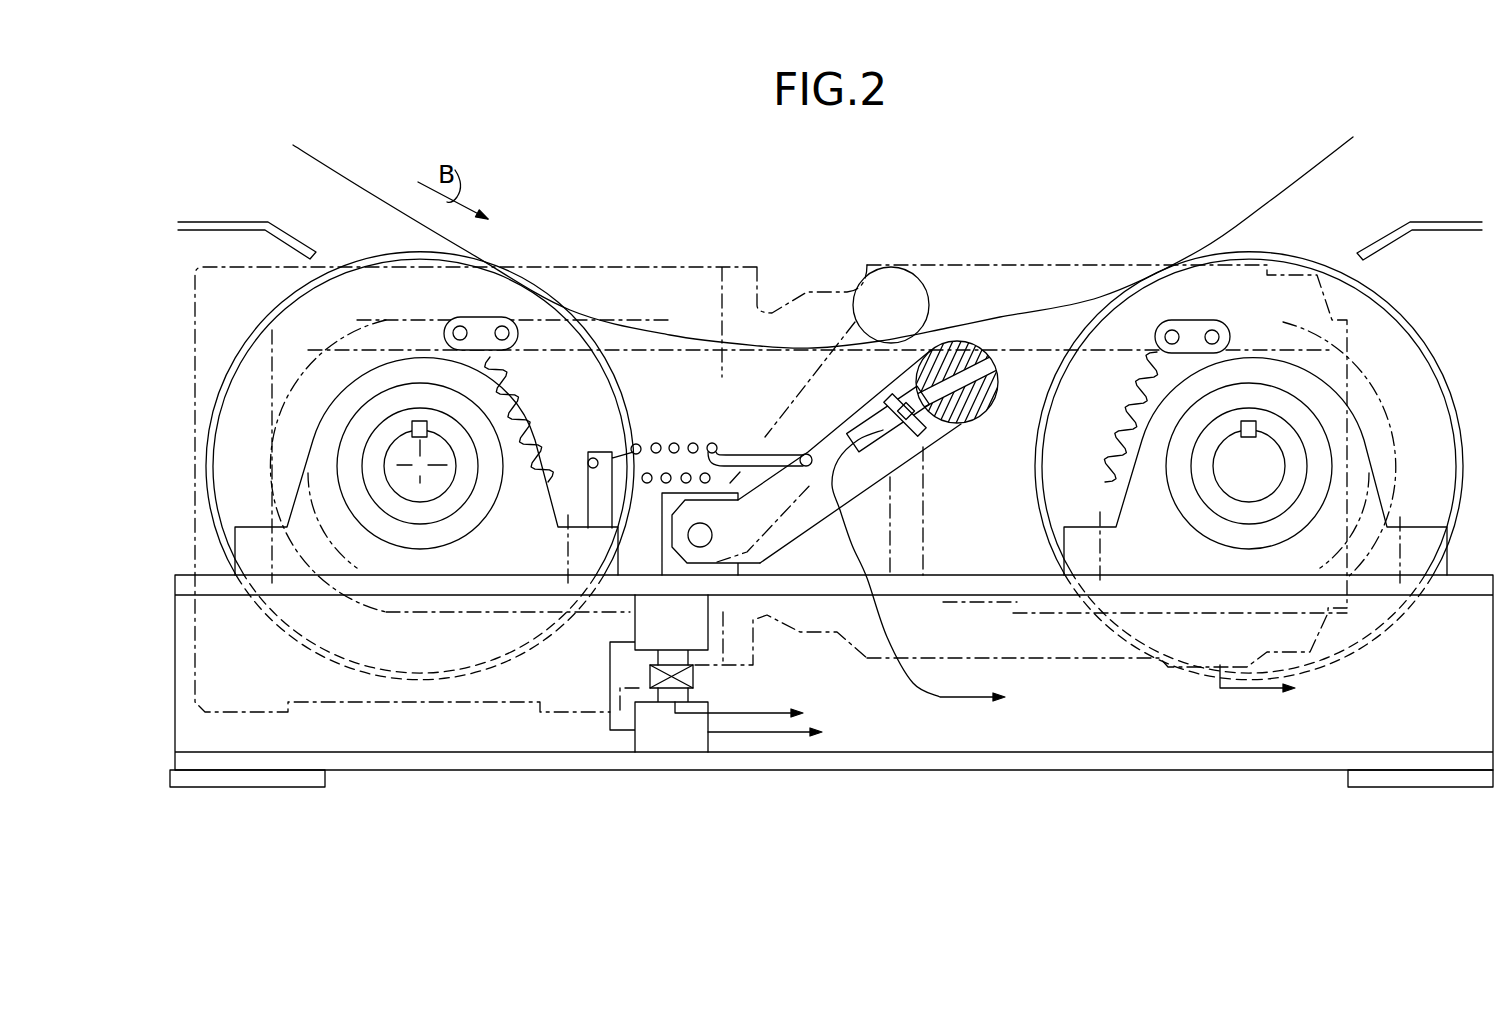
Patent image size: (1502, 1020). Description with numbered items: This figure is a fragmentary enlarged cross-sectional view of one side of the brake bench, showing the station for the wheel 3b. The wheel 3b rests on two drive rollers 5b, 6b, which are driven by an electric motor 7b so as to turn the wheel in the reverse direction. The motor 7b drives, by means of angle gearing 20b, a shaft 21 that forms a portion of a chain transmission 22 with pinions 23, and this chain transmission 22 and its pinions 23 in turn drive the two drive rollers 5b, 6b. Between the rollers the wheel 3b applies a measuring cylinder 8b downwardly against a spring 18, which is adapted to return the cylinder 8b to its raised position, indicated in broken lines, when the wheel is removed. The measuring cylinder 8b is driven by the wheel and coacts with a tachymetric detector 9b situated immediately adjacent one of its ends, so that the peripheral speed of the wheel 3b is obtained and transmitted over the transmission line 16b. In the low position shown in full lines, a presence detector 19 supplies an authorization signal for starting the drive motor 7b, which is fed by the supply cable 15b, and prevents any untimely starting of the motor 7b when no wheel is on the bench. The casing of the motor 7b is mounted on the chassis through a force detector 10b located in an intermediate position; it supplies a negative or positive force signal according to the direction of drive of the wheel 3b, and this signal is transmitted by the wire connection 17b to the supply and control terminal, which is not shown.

The wheel 3b is at (1320, 176).
The drive roller 5b is at (258, 332).
The drive roller 6b is at (1393, 318).
The electric motor 7b is at (1080, 267).
The measurement cylinder 8b is at (930, 302).
The tachymetric detector 9b is at (920, 450).
The force detector 10b is at (693, 677).
The supply cable 15b is at (1247, 688).
The transmission line 16b is at (957, 697).
The wire connection 17b is at (743, 732).
The spring 18 is at (672, 447).
The presence detector 19 is at (898, 466).
The angle gearing 20b is at (687, 265).
The shaft 21 is at (423, 463).
The chain transmission 22 is at (487, 323).
The pinions 23 is at (512, 370).